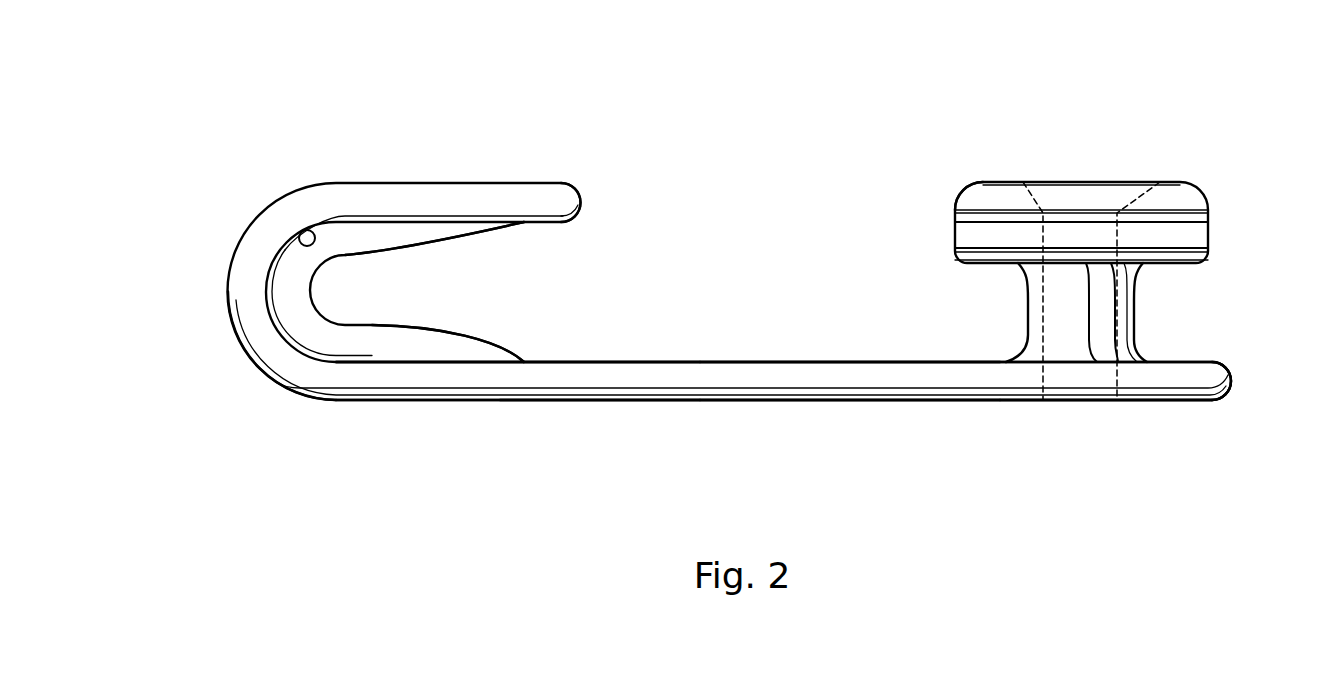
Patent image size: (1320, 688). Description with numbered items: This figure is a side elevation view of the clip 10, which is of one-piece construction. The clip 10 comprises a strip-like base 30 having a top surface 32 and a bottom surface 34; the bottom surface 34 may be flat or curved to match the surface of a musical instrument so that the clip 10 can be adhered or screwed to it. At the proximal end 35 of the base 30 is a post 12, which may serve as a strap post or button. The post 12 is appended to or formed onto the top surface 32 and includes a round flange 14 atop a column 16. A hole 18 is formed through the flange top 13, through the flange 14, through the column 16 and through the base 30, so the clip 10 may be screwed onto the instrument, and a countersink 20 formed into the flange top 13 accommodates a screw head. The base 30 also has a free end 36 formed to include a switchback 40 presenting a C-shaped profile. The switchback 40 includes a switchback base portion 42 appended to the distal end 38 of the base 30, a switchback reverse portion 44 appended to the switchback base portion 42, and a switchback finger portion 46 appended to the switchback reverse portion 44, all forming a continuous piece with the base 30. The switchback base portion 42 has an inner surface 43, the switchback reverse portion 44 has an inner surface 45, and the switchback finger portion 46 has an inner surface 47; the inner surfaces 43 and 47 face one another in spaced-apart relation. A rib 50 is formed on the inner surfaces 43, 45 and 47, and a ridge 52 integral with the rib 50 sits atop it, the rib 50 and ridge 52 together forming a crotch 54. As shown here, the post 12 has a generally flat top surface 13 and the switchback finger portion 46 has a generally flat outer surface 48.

The clip 10 is at (759, 125).
The post 12 is at (1170, 113).
The top surface of post flange 13 is at (1160, 182).
The round flange 14 is at (967, 191).
The column 16 is at (1138, 310).
The hole 18 is at (1098, 392).
The countersink 20 is at (1040, 197).
The base 30 is at (766, 412).
The top surface 32 is at (888, 361).
The bottom surface 34 is at (928, 401).
The proximal end 35 is at (1240, 357).
The free end 36 is at (260, 412).
The distal end 38 is at (595, 418).
The switchback 40 is at (248, 98).
The switchback base portion 42 is at (538, 424).
The inner surface of switchback base portion 43 is at (537, 361).
The switchback reverse portion 44 is at (215, 190).
The inner surface of switchback reverse portion 45 is at (301, 233).
The switchback finger portion 46 is at (568, 155).
The inner surface of switchback finger portion 47 is at (540, 224).
The outer surface of switchback finger portion 48 is at (438, 182).
The rib 50 is at (493, 320).
The ridge 52 is at (373, 322).
The crotch 54 is at (532, 273).